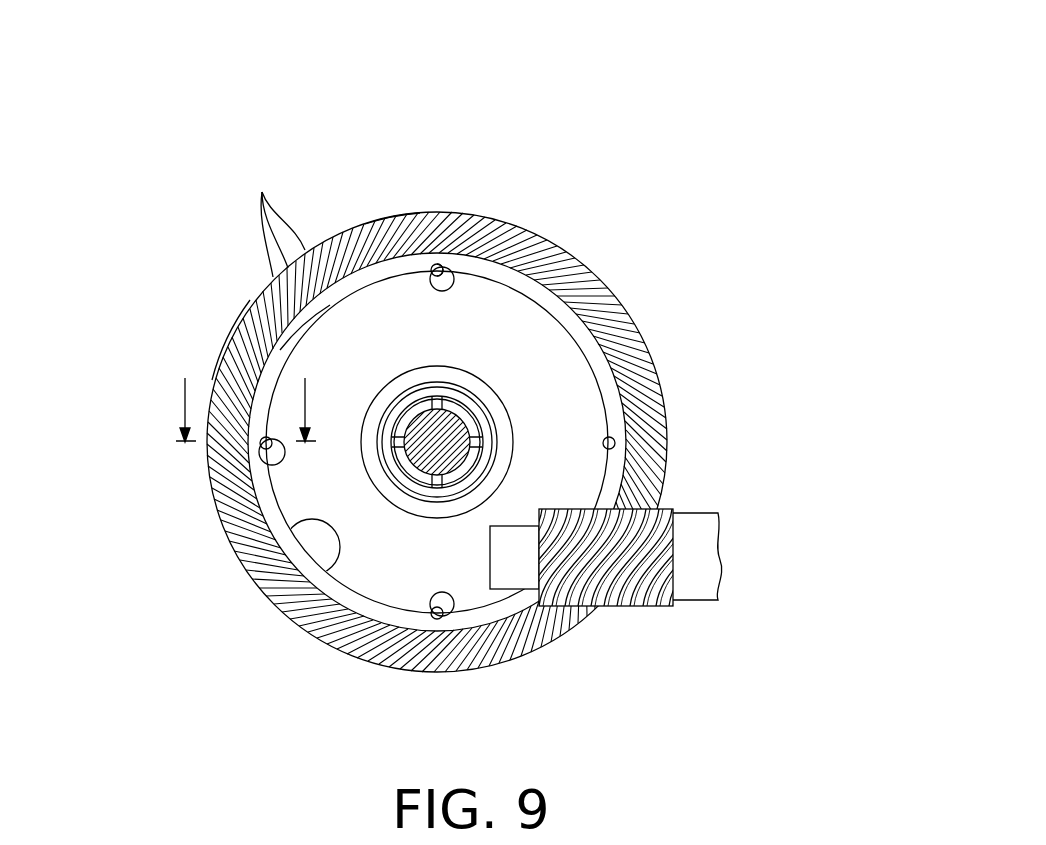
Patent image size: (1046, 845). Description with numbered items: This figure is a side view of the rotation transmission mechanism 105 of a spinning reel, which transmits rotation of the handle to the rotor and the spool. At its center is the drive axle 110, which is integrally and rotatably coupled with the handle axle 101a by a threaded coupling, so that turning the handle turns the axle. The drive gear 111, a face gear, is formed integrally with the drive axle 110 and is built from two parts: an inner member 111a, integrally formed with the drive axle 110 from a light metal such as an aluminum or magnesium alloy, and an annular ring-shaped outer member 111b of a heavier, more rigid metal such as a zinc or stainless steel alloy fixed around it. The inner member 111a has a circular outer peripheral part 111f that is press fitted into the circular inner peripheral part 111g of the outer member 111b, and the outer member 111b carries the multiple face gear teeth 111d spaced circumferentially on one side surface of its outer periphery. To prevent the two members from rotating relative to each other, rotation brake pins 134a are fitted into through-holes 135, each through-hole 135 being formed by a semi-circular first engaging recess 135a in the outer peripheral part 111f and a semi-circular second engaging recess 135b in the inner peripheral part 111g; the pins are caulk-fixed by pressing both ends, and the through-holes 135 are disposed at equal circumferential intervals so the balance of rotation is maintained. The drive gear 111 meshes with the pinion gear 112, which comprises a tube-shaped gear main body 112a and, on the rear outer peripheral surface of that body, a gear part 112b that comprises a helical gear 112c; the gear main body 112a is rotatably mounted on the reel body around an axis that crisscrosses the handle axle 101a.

The rotation transmission mechanism 105 is at (592, 168).
The drive gear 111 is at (592, 240).
The inner member 111a is at (228, 335).
The outer member 111b is at (385, 214).
The face gear teeth 111d is at (262, 215).
The outer peripheral part 111f is at (310, 327).
The inner peripheral part 111g is at (292, 558).
The drive axle 110 is at (512, 383).
The handle axle 101a is at (460, 420).
The rotation brake pin 134a is at (432, 270).
The through-hole 135 is at (555, 136).
The first engaging recess 135a is at (437, 262).
The second engaging recess 135b is at (445, 278).
The pinion gear 112 is at (640, 636).
The gear main body 112a is at (692, 597).
The gear part 112b is at (597, 606).
The helical gear 112c is at (612, 610).